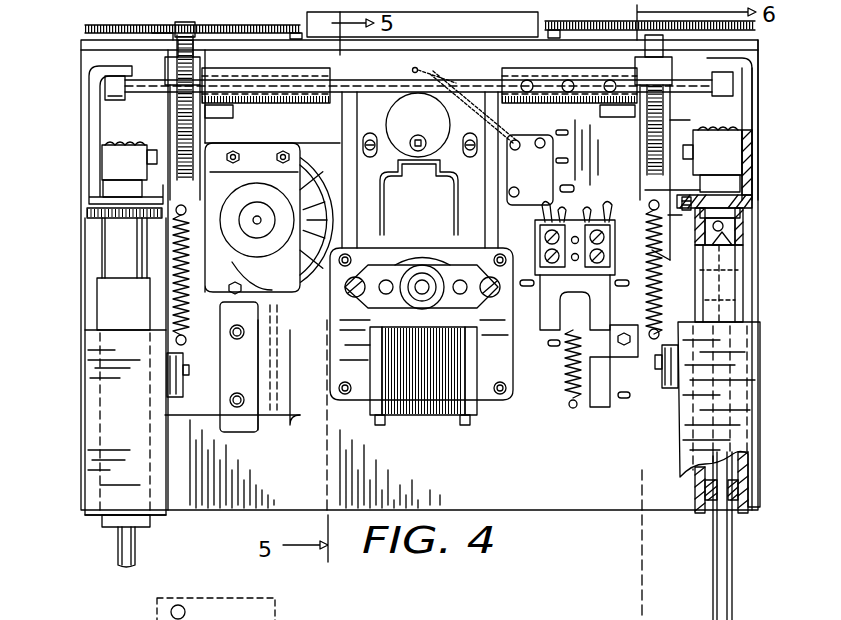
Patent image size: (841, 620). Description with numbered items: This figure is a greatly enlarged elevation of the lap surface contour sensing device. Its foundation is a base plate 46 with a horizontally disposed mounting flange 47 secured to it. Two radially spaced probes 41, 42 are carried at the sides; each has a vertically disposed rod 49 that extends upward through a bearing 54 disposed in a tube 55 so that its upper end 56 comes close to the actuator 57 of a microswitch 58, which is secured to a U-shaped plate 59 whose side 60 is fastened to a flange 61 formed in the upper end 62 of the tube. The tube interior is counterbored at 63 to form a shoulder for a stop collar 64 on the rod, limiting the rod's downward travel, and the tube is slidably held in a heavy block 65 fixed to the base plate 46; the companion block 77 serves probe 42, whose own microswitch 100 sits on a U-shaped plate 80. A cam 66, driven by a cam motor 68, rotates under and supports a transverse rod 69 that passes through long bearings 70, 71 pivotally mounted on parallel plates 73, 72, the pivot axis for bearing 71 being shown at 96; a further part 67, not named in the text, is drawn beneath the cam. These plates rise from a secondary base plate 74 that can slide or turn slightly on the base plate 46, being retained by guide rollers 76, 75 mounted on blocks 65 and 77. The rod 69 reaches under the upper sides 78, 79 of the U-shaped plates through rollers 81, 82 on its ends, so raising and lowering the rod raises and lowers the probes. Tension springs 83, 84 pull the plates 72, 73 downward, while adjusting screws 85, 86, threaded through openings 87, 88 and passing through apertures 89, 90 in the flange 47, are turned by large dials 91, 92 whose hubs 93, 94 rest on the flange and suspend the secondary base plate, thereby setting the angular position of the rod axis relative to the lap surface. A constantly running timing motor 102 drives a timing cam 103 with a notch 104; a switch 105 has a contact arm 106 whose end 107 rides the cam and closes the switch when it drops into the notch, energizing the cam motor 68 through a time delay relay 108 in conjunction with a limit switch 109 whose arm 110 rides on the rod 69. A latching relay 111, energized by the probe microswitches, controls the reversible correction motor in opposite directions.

The probe 41 is at (743, 591).
The probe 42 is at (106, 550).
The base plate 46 is at (566, 470).
The mounting flange 47 is at (490, 27).
The rod 49 is at (733, 545).
The bearing 54 is at (740, 490).
The tube 55 is at (748, 460).
The upper end of rod 56 is at (742, 212).
The actuator 57 is at (750, 198).
The microswitch 58 is at (735, 150).
The U-shaped plate 59 is at (762, 124).
The side of U-shaped plate 60 is at (682, 204).
The flange 61 is at (668, 215).
The upper end of tube / aperture 62 is at (645, 190).
The counterbore 63 is at (738, 228).
The stop collar 64 is at (740, 245).
The block 65 is at (760, 372).
The cam 66 is at (420, 125).
The bracket 67 is at (418, 151).
The cam motor 68 is at (417, 431).
The rod 69 is at (383, 88).
The long bearing 70 is at (556, 70).
The long bearing 71 is at (280, 93).
The plate 72 is at (180, 125).
The plate 73 is at (660, 110).
The secondary base plate 74 is at (606, 149).
The guide roller 75 is at (180, 405).
The guide roller 76 is at (664, 392).
The block 77 is at (88, 428).
The upper side of U-shaped plate 78 is at (720, 60).
The upper side of U-shaped plate 79 is at (122, 67).
The U-shaped plate 80 is at (95, 150).
The roller 81 is at (700, 92).
The roller 82 is at (165, 108).
The tension spring 83 is at (647, 283).
The tension spring 84 is at (175, 243).
The adjusting screw 85 is at (666, 118).
The adjusting screw 86 is at (180, 133).
The threaded opening 87 is at (660, 64).
The threaded opening 88 is at (200, 63).
The aperture 89 is at (632, 55).
The aperture 90 is at (178, 25).
The dial 91 is at (572, 20).
The dial 92 is at (258, 20).
The hub 93 is at (625, 22).
The hub 94 is at (210, 24).
The pivot axis 96 is at (236, 112).
The microswitch 100 is at (108, 170).
The timing motor 102 is at (270, 166).
The timing cam 103 is at (236, 196).
The notch 104 is at (300, 180).
The switch 105 is at (243, 432).
The contact arm 106 is at (262, 258).
The end of contact arm 107 is at (245, 238).
The time delay relay 108 is at (302, 428).
The limit switch 109 is at (541, 174).
The arm 110 is at (462, 95).
The latching relay 111 is at (527, 254).